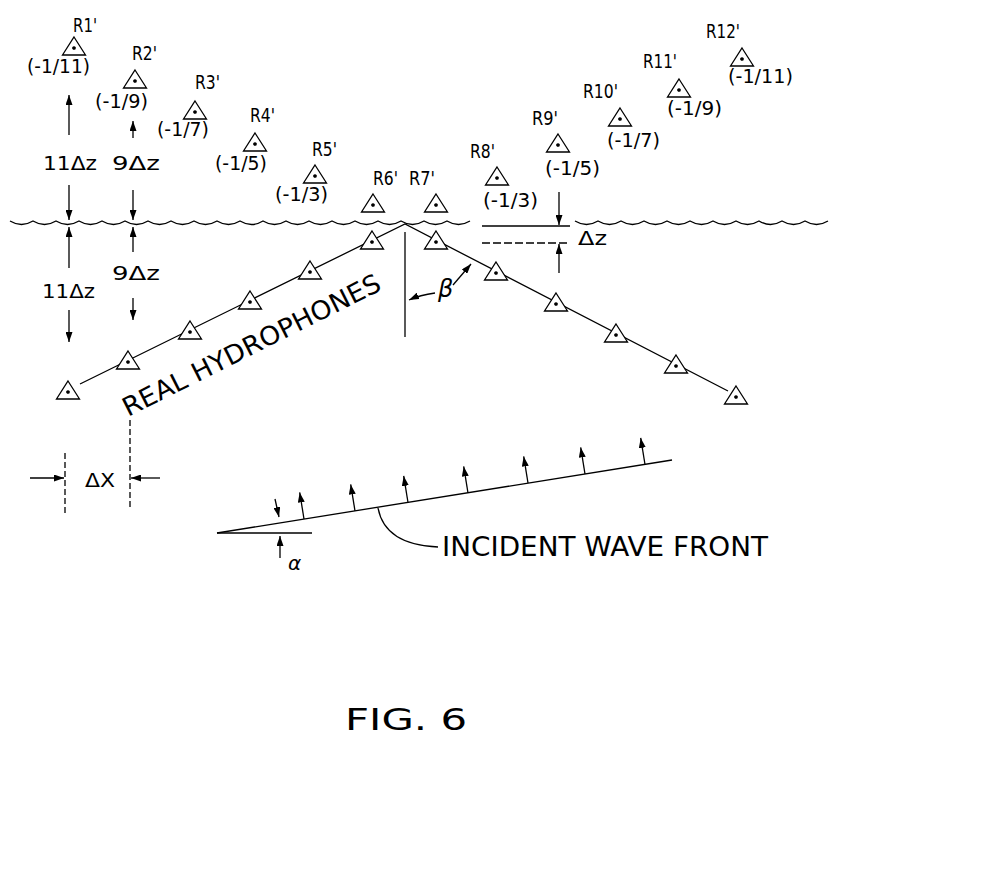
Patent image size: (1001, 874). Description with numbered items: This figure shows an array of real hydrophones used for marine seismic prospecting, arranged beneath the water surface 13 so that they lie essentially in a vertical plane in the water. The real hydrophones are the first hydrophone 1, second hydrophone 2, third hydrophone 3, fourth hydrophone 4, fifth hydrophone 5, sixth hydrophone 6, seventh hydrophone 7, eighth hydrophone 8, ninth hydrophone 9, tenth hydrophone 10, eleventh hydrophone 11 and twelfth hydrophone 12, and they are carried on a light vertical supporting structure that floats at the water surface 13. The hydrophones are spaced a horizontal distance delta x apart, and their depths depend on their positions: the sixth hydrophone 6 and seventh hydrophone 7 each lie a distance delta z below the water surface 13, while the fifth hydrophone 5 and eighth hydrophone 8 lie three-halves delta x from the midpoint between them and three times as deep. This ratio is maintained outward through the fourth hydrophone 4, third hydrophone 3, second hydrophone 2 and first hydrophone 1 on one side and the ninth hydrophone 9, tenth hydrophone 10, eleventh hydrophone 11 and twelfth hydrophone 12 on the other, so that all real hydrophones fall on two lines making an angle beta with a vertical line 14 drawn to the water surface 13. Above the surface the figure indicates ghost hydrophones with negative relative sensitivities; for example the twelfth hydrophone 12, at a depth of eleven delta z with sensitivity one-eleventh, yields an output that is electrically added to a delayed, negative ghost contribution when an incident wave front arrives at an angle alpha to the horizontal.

The water surface 13 is at (624, 226).
The vertical line 14 is at (405, 323).
The hydrophone R1 1 is at (63, 401).
The hydrophone R2 2 is at (121, 371).
The hydrophone R3 3 is at (181, 341).
The hydrophone R4 4 is at (242, 311).
The hydrophone R5 5 is at (303, 281).
The hydrophone R6 6 is at (358, 250).
The hydrophone R7 7 is at (449, 250).
The hydrophone R8 8 is at (500, 283).
The hydrophone R9 9 is at (559, 313).
The hydrophone R10 10 is at (624, 345).
The hydrophone R11 11 is at (684, 375).
The hydrophone R12 12 is at (742, 407).